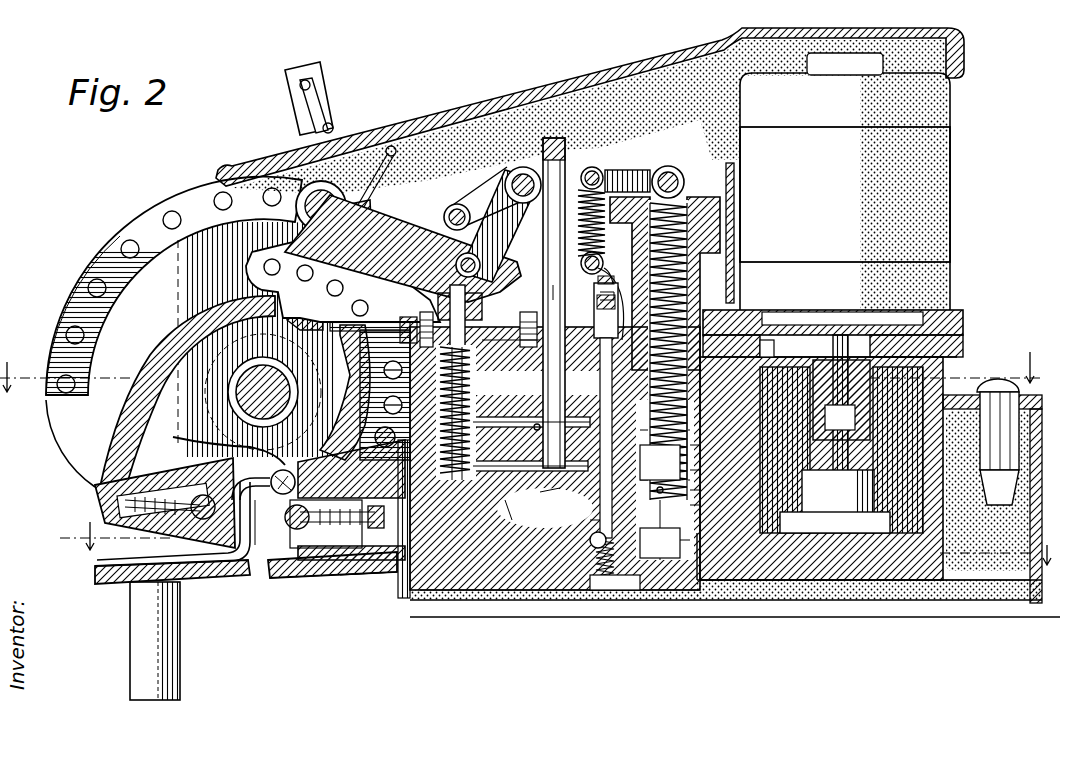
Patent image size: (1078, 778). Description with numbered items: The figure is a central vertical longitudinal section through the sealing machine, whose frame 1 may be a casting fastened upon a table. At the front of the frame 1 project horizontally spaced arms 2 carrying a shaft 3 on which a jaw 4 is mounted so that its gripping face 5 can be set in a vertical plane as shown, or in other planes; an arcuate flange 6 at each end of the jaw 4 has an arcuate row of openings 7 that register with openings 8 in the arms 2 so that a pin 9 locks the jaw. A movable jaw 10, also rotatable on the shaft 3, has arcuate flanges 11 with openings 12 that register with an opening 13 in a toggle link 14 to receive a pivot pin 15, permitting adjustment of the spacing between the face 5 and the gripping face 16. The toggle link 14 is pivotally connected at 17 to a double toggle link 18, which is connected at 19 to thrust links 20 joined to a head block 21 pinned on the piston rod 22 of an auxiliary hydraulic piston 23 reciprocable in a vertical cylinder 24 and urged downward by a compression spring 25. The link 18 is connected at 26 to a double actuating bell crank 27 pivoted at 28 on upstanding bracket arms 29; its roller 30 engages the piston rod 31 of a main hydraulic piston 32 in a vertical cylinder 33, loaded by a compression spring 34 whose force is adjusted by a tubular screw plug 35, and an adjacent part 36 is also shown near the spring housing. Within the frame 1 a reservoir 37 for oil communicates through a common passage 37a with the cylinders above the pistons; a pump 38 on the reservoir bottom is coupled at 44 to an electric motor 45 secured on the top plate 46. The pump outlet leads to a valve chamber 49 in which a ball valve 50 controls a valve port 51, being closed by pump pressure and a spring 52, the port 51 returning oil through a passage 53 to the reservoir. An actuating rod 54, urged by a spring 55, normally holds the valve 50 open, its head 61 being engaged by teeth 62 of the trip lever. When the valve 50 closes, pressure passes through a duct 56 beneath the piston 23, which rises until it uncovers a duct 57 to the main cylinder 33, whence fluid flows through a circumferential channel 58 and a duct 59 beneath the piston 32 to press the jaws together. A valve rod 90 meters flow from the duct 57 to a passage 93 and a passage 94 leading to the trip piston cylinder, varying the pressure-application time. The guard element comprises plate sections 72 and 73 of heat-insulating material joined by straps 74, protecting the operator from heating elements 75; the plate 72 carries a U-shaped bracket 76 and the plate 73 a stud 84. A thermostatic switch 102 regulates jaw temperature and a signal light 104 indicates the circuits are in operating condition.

The frame 1 is at (735, 605).
The arms 2 is at (372, 322).
The shaft 3 is at (225, 442).
The jaw 4 is at (350, 590).
The gripping face 5 is at (258, 578).
The arcuate flange 6 is at (228, 196).
The openings 7 is at (313, 274).
The openings 8 is at (555, 539).
The pin 9 is at (330, 470).
The movable jaw 10 is at (100, 498).
The arcuate flanges 11 is at (97, 260).
The openings 12 is at (157, 221).
The opening 13 is at (325, 197).
The toggle link 14 is at (420, 224).
The pivot pin 15 is at (322, 215).
The gripping face 16 is at (242, 555).
The pivotal connection 17 is at (492, 265).
The double toggle link 18 is at (482, 192).
The pivotal connection 19 is at (456, 204).
The thrust links 20 is at (440, 304).
The head block 21 is at (505, 298).
The piston rod 22 is at (438, 284).
The auxiliary hydraulic piston 23 is at (400, 578).
The vertical cylinder 24 is at (406, 310).
The compression spring 25 is at (506, 330).
The pivotal connection 26 is at (523, 168).
The double actuating bell crank 27 is at (608, 182).
The pivot 28 is at (565, 190).
The upstanding bracket arms 29 is at (591, 275).
The roller 30 is at (680, 171).
The piston rod 31 is at (683, 198).
The main hydraulic piston 32 is at (696, 513).
The vertical cylinder 33 is at (696, 494).
The compression spring 34 is at (696, 427).
The tubular screw plug 35 is at (700, 290).
The wire 36 is at (610, 270).
The reservoir 37 is at (900, 520).
The common passage 37a is at (760, 330).
The pump 38 is at (835, 560).
The coupling 44 is at (874, 440).
The electric motor 45 is at (925, 293).
The top plate 46 is at (938, 348).
The valve chamber 49 is at (640, 535).
The ball valve 50 is at (568, 532).
The valve port 51 is at (585, 520).
The spring 52 is at (620, 600).
The passage 53 is at (545, 500).
The actuating rod 54 is at (646, 478).
The spring 55 is at (595, 318).
The duct 56 is at (490, 597).
The duct 57 is at (516, 509).
The circumferential channel 58 is at (696, 450).
The duct 59 is at (696, 473).
The head 61 is at (600, 283).
The teeth 62 is at (614, 296).
The plate section 72 is at (306, 593).
The plate section 73 is at (110, 585).
The straps 74 is at (255, 490).
The electrical heating elements 75 is at (170, 542).
The U-shaped bracket 76 is at (357, 613).
The stud 84 is at (138, 662).
The valve rod 90 is at (552, 290).
The passage 93 is at (510, 400).
The passage 94 is at (537, 424).
The thermostatic switch 102 is at (278, 476).
The signal light 104 is at (1010, 349).